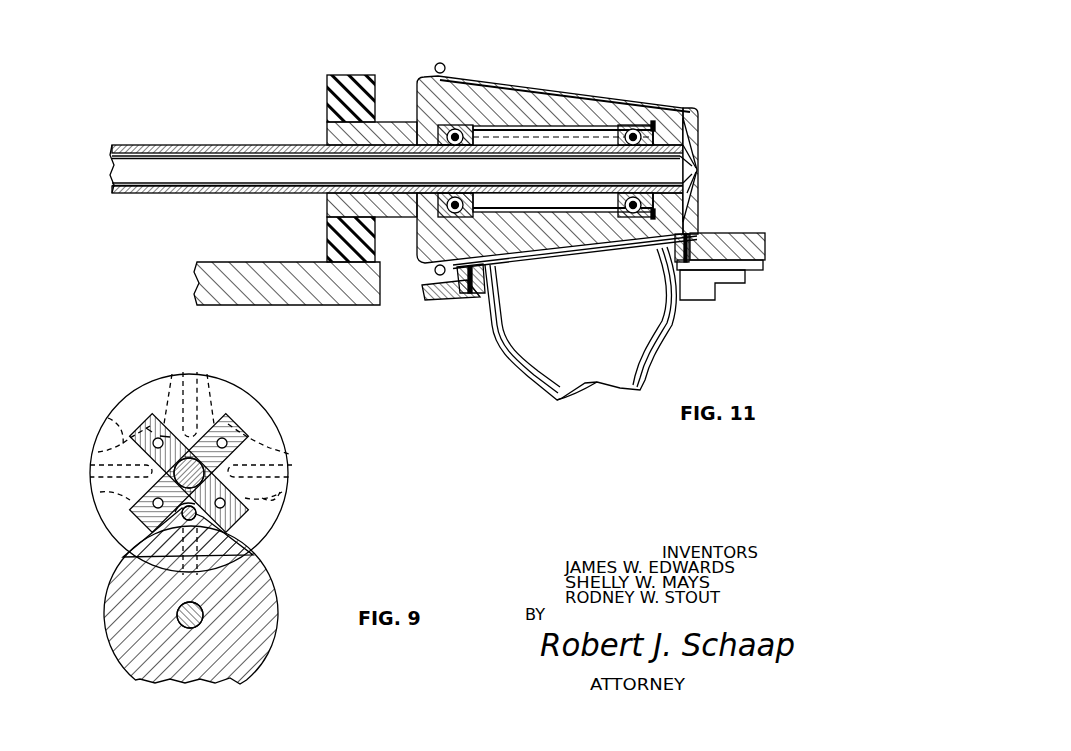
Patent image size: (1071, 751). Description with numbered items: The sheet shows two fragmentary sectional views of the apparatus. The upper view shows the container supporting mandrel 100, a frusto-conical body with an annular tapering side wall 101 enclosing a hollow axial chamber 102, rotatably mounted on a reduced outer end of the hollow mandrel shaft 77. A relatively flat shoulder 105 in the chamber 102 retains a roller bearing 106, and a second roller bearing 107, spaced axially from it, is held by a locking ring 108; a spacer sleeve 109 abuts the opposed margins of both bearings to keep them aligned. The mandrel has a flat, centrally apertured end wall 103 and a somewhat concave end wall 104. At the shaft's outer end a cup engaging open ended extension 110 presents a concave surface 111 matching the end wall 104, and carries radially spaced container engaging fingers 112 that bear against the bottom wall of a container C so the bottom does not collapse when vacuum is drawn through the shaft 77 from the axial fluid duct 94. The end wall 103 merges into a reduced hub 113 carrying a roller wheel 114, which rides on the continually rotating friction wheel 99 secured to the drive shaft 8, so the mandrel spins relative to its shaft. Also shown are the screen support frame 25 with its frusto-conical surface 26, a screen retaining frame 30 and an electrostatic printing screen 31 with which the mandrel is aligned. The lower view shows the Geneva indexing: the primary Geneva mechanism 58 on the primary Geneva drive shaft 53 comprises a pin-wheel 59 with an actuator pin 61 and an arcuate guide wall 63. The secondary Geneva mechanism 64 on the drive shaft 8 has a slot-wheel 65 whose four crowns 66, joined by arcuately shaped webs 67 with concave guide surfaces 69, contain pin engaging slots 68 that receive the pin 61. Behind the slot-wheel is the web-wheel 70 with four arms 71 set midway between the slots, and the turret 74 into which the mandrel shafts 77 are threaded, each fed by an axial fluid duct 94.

In FIG. 11, the mandrel shaft 77 is at (177, 145).
In FIG. 11, the friction wheel 99 is at (241, 262).
In FIG. 11, the hub 113 is at (327, 130).
In FIG. 11, the shoulder 105 is at (450, 217).
In FIG. 11, the roller wheel 114 is at (348, 75).
In FIG. 11, the end wall 103 is at (415, 100).
In FIG. 11, the container supporting mandrel 100 is at (575, 96).
In FIG. 11, the container C is at (505, 80).
In FIG. 11, the tapering side wall 101 is at (530, 84).
In FIG. 11, the axial chamber 102 is at (596, 126).
In FIG. 11, the spacer sleeve 109 is at (535, 130).
In FIG. 11, the roller bearing 106 is at (458, 130).
In FIG. 11, the second roller bearing 107 is at (640, 130).
In FIG. 11, the locking ring 108 is at (670, 116).
In FIG. 11, the concave end wall 104 is at (700, 114).
In FIG. 11, the cup engaging open ended extension 110 is at (672, 146).
In FIG. 11, the concave surface 111 is at (680, 160).
In FIG. 11, the container engaging fingers 112 is at (683, 178).
In FIG. 11, the screen retaining frame 30 is at (705, 234).
In FIG. 11, the frusto-conical surface 26 is at (726, 233).
In FIG. 11, the screen support frame 25 is at (766, 233).
In FIG. 11, the electrostatic printing screen 31 is at (685, 300).
In FIG. 9, the primary Geneva mechanism 58 is at (283, 539).
In FIG. 9, the pin-wheel 59 is at (262, 662).
In FIG. 9, the arcuate guide wall 63 is at (128, 555).
In FIG. 9, the primary Geneva drive shaft 53 is at (204, 613).
In FIG. 9, the turret 74 is at (205, 470).
In FIG. 9, the axial fluid duct 94 is at (224, 440).
In FIG. 9, the drive shaft 8 is at (210, 480).
In FIG. 9, the actuator pin 61 is at (183, 515).
In FIG. 9, the pin engaging slot 68 is at (192, 372).
In FIG. 9, the slot-wheel 65 is at (170, 395).
In FIG. 9, the secondary Geneva mechanism 64 is at (212, 395).
In FIG. 9, the crown 66 is at (92, 453).
In FIG. 9, the arcuately shaped web 67 is at (100, 493).
In FIG. 9, the concave guide surface 69 is at (123, 445).
In FIG. 9, the web-wheel 70 is at (162, 437).
In FIG. 9, the arm 71 is at (150, 430).